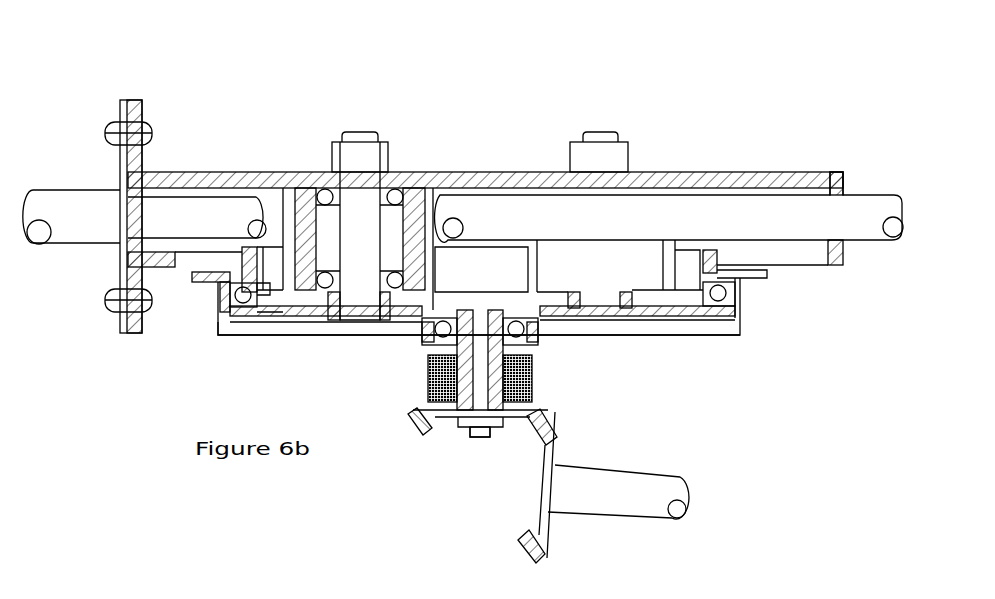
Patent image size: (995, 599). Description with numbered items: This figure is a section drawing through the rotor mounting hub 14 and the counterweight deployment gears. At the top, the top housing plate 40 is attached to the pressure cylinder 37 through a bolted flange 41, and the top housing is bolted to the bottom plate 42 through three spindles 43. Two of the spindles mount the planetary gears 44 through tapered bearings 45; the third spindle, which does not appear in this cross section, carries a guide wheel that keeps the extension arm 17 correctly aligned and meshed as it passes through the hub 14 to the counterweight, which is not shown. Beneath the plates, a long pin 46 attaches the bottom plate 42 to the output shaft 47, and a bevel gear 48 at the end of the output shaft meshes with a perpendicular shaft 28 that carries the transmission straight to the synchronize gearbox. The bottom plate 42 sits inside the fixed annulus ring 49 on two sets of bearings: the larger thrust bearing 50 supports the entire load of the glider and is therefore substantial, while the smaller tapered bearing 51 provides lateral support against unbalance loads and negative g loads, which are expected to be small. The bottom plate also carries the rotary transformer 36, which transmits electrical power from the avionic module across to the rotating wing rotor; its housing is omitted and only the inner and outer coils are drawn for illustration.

The hub 14 is at (565, 65).
The extension arm 17 is at (697, 215).
The perpendicular shaft 28 is at (620, 486).
The rotary transformer 36 is at (435, 358).
The pressure cylinder 37 is at (85, 203).
The top housing plate 40 is at (517, 178).
The bolted flange 41 is at (140, 106).
The bottom plate 42 is at (298, 318).
The spindles 43 is at (372, 195).
The planetary gears 44 is at (303, 200).
The tapered bearings 45 is at (316, 193).
The long pin 46 is at (477, 398).
The output shaft 47 is at (491, 473).
The bevel gear 48 is at (430, 432).
The fixed annulus ring 49 is at (266, 338).
The thrust bearing 50 is at (250, 305).
The tapered bearing 51 is at (452, 338).